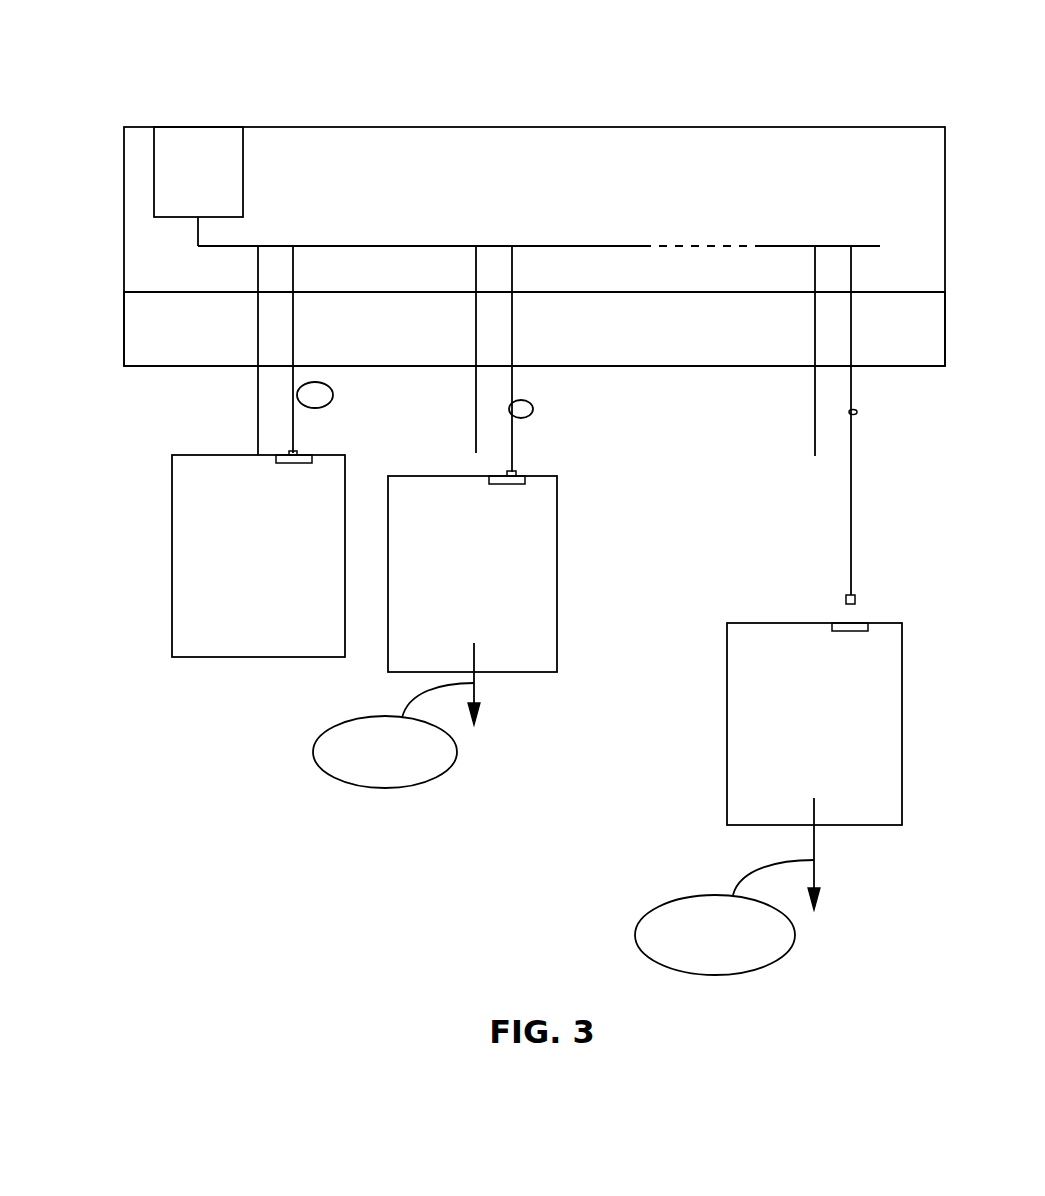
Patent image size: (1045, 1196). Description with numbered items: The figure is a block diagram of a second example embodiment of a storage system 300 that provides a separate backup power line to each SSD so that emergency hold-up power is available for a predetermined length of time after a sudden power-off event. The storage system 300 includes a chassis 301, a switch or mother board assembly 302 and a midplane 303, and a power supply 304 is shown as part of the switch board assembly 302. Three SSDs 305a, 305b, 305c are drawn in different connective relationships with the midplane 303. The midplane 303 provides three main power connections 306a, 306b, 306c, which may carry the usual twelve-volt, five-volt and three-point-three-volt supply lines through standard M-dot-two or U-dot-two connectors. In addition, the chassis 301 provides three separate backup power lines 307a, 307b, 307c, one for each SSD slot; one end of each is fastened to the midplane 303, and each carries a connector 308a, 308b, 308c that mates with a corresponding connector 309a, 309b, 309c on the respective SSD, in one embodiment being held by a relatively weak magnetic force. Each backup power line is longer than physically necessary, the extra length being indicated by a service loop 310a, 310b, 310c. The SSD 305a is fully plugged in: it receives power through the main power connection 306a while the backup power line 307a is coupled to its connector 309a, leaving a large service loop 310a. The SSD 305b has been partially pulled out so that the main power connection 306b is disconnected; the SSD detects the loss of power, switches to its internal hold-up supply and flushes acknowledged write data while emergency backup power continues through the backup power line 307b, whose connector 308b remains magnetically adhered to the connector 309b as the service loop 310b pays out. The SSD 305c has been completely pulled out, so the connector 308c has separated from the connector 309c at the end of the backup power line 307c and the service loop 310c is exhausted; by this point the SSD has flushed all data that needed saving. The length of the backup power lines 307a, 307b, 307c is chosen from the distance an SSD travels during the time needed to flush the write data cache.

The storage system 300 is at (263, 69).
The chassis 301 is at (107, 127).
The switch board assembly 302 is at (534, 233).
The midplane 303 is at (534, 329).
The power supply 304 is at (198, 186).
The SSD 305a is at (258, 556).
The SSD 305b is at (435, 632).
The SSD 305c is at (768, 799).
The main power connection 306a is at (257, 441).
The main power connection 306b is at (474, 440).
The main power connection 306c is at (813, 441).
The backup power line 307a is at (295, 350).
The backup power line 307b is at (513, 350).
The backup power line 307c is at (852, 350).
The connector 308a is at (297, 453).
The connector 308b is at (516, 472).
The connector 308c is at (857, 594).
The connector 309a is at (290, 466).
The connector 309b is at (500, 486).
The connector 309c is at (845, 634).
The service loop 310a is at (333, 393).
The service loop 310b is at (533, 407).
The service loop 310c is at (858, 410).